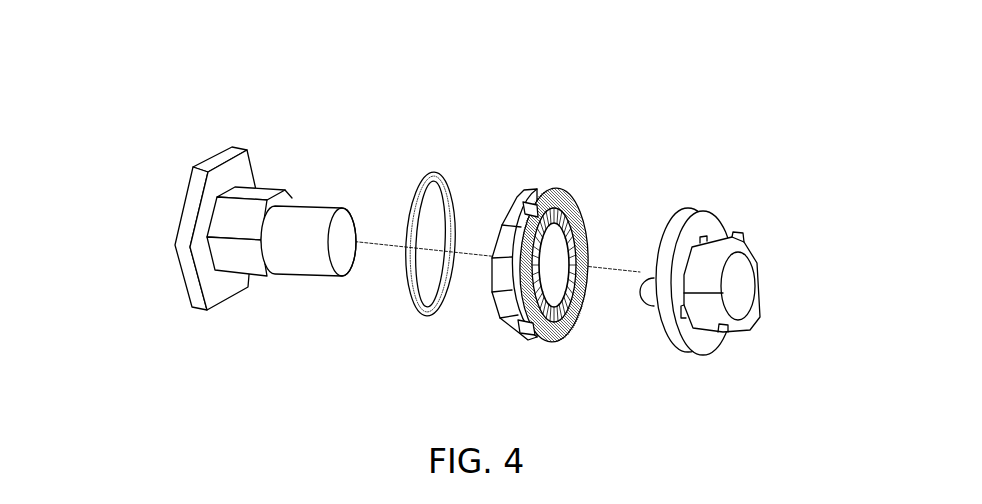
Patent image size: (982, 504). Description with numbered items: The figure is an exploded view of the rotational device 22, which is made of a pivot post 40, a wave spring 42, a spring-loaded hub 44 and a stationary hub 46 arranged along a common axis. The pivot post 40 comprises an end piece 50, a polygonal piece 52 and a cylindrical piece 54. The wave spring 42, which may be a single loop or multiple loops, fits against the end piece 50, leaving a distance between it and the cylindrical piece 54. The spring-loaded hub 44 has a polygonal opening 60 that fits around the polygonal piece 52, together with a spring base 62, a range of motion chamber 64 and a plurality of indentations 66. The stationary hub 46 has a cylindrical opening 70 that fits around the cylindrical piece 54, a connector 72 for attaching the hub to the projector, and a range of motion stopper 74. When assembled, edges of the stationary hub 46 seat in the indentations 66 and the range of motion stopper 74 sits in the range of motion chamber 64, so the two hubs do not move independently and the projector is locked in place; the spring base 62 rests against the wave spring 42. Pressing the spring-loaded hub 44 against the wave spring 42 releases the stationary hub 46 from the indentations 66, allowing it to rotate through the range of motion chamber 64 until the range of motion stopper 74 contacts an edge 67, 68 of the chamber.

The rotational device 22 is at (244, 85).
The pivot post 40 is at (212, 259).
The wave spring 42 is at (427, 316).
The spring-loaded hub 44 is at (535, 246).
The stationary hub 46 is at (743, 273).
The end piece 50 is at (188, 277).
The polygonal piece 52 is at (243, 232).
The cylindrical piece 54 is at (303, 242).
The polygonal opening 60 is at (590, 243).
The spring base 62 is at (505, 232).
The range of motion chamber 64 is at (512, 301).
The plurality of indentations 66 is at (596, 252).
The edge of range of motion chamber 67 is at (521, 335).
The edge of range of motion chamber 68 is at (523, 203).
The cylindrical opening 70 is at (738, 286).
The connector 72 is at (712, 257).
The range of motion stopper 74 is at (647, 294).